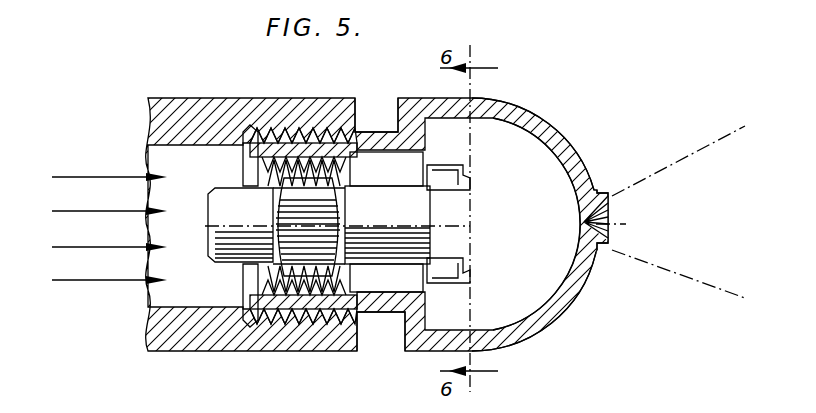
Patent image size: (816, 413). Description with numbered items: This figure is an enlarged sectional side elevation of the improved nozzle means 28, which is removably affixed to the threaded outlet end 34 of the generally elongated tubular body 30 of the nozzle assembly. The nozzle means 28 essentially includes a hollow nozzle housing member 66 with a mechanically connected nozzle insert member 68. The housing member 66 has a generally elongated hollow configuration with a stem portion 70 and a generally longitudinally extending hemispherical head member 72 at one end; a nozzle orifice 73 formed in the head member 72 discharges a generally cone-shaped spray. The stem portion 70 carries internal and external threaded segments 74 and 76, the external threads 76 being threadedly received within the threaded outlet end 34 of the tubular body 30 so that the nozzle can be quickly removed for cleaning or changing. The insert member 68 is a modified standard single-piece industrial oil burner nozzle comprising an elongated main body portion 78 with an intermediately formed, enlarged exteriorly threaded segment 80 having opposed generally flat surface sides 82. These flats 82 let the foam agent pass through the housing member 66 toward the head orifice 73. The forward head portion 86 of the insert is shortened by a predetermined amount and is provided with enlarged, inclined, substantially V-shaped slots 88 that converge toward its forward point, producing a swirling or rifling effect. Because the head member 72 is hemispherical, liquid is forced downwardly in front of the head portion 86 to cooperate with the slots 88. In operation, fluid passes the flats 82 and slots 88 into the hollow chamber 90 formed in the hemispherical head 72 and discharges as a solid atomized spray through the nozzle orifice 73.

The nozzle means 28 is at (549, 88).
The tubular body 30 is at (223, 105).
The outlet end 34 is at (290, 100).
The nozzle housing member 66 is at (380, 128).
The nozzle insert member 68 is at (228, 183).
The stem portion 70 is at (373, 313).
The hemispherical head member 72 is at (543, 121).
The nozzle orifice 73 is at (610, 224).
The internal threaded segment 74 is at (281, 305).
The external threaded segment 76 is at (315, 318).
The main body portion 78 is at (248, 240).
The enlarged exteriorly threaded segment 80 is at (332, 179).
The flat surface sides 82 is at (320, 218).
The head portion 86 is at (440, 163).
The slots 88 is at (457, 268).
The hollow chamber 90 is at (560, 250).